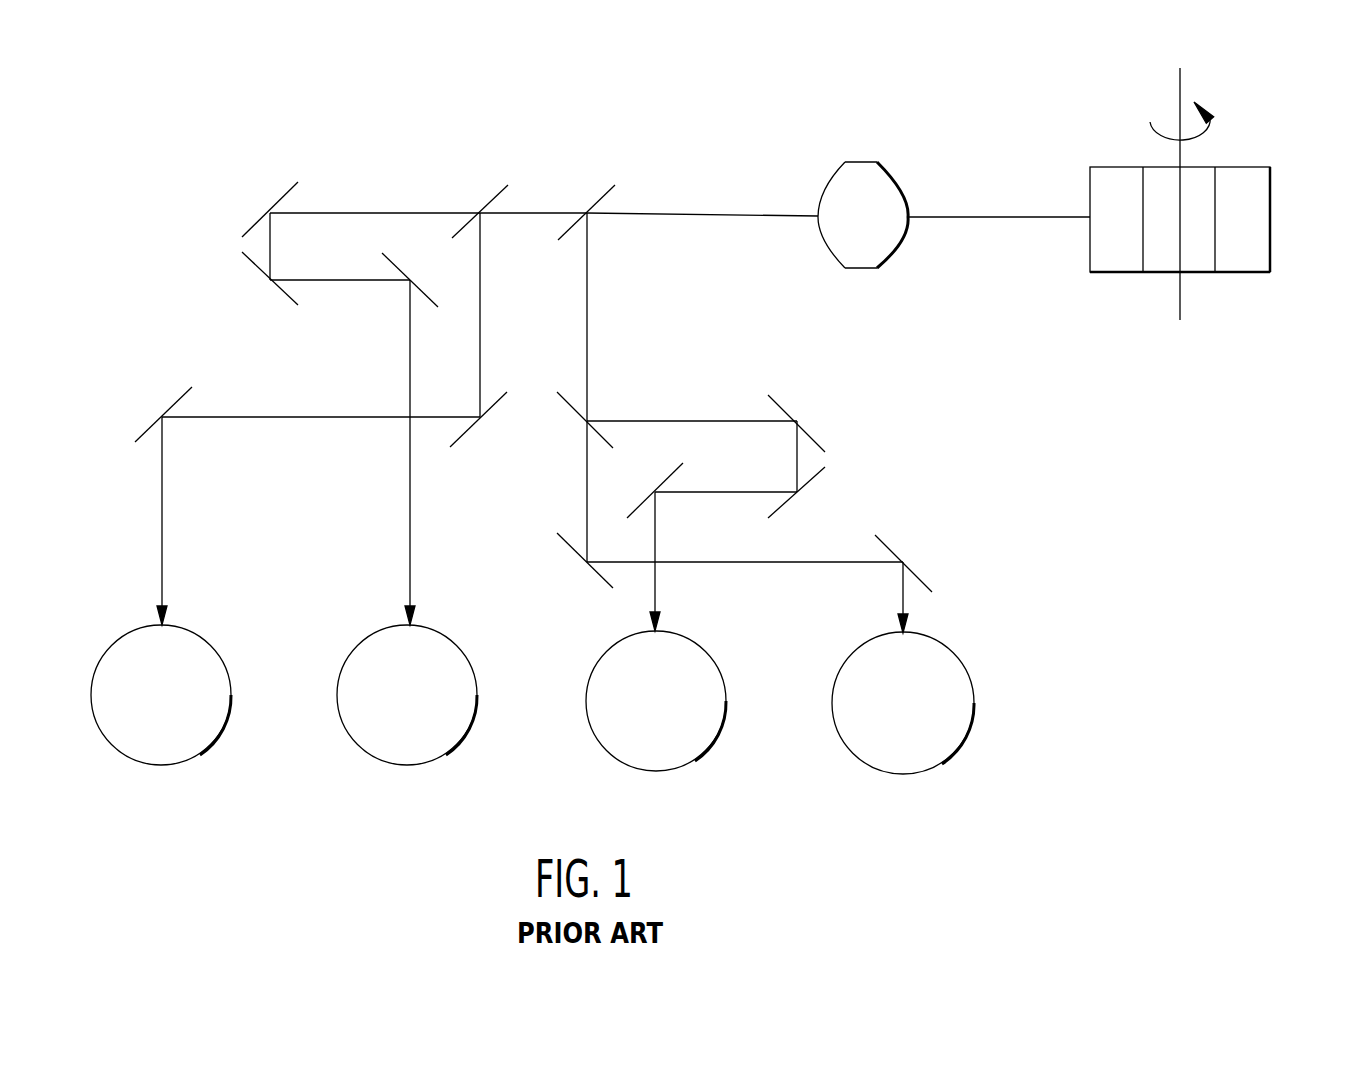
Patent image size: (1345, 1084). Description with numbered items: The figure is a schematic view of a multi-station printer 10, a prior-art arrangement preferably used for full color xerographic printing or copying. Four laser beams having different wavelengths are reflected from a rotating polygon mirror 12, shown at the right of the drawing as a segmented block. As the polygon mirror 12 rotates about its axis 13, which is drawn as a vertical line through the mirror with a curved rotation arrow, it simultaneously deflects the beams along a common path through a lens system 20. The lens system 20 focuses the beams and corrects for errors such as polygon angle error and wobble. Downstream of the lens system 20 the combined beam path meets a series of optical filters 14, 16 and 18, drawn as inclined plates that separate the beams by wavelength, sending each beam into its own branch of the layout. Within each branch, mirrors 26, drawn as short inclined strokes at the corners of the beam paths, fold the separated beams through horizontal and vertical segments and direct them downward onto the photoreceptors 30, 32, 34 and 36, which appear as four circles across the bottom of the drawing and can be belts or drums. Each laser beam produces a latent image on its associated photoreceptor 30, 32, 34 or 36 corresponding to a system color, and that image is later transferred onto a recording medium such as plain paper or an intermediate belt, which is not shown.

The multi-station printer 10 is at (728, 152).
The rotating polygon mirror 12 is at (1215, 167).
The axis 13 is at (1182, 85).
The optical filter 14 is at (615, 187).
The optical filter 16 is at (507, 190).
The optical filter 18 is at (577, 415).
The lens system 20 is at (880, 163).
The mirrors 26 is at (282, 197).
The photoreceptor 30 is at (198, 757).
The photoreceptor 32 is at (445, 757).
The photoreceptor 34 is at (670, 770).
The photoreceptor 36 is at (873, 773).